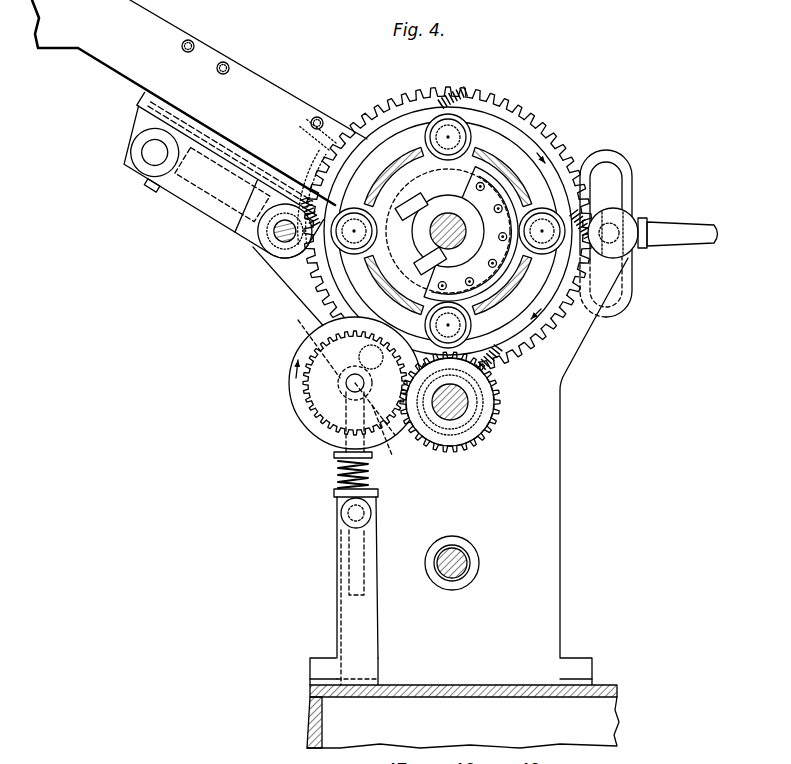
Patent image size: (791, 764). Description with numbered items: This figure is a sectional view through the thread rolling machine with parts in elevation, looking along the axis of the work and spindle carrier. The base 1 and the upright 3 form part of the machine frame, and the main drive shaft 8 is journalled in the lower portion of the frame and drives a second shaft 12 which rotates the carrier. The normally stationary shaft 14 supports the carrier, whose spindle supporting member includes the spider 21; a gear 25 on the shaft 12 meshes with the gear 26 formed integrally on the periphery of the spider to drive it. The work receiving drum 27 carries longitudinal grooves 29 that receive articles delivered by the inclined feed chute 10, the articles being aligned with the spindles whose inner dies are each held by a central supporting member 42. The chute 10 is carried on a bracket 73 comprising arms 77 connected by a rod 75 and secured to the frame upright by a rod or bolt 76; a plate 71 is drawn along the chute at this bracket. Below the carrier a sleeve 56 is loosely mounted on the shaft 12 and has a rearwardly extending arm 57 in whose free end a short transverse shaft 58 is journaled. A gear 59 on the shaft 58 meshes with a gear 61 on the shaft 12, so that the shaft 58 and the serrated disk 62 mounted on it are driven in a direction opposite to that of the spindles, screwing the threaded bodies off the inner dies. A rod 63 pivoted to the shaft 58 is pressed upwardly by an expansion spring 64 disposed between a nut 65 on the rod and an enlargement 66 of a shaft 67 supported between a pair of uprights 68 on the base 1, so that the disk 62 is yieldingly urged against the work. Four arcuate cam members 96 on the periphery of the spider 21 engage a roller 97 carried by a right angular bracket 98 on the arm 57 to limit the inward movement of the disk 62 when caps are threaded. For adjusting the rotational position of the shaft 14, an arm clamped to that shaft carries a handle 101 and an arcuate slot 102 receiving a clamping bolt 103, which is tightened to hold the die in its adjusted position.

The base 1 is at (452, 692).
The upright 3 is at (560, 567).
The main drive shaft 8 is at (437, 563).
The arm 10 is at (286, 88).
The second shaft 12 is at (449, 416).
The shaft 14 is at (449, 230).
The spider 21 is at (560, 170).
The gear 25 is at (486, 409).
The gear 26 is at (554, 160).
The work receiving drum 27 is at (522, 138).
The longitudinal grooves 29 is at (387, 236).
The central supporting member 42 is at (462, 132).
The sleeve 56 is at (478, 397).
The arm 57 is at (382, 430).
The transverse shaft 58 is at (346, 385).
The gear 59 is at (320, 407).
The gear 61 is at (480, 433).
The disk 62 is at (294, 348).
The rod 63 is at (330, 420).
The expansion spring 64 is at (340, 476).
The nut 65 is at (343, 440).
The enlargement 66 is at (337, 498).
The shaft 67 is at (362, 513).
The uprights 68 is at (367, 607).
The plate 71 is at (192, 124).
The bracket 73 is at (305, 252).
The rod 75 is at (155, 156).
The rod or bolt 76 is at (280, 240).
The arms 77 is at (207, 200).
The arcuate cam members 96 is at (455, 96).
The roller 97 is at (400, 260).
The right angular bracket 98 is at (340, 349).
The handle 101 is at (678, 221).
The arcuate slot 102 is at (614, 177).
The clamping bolt 103 is at (617, 244).